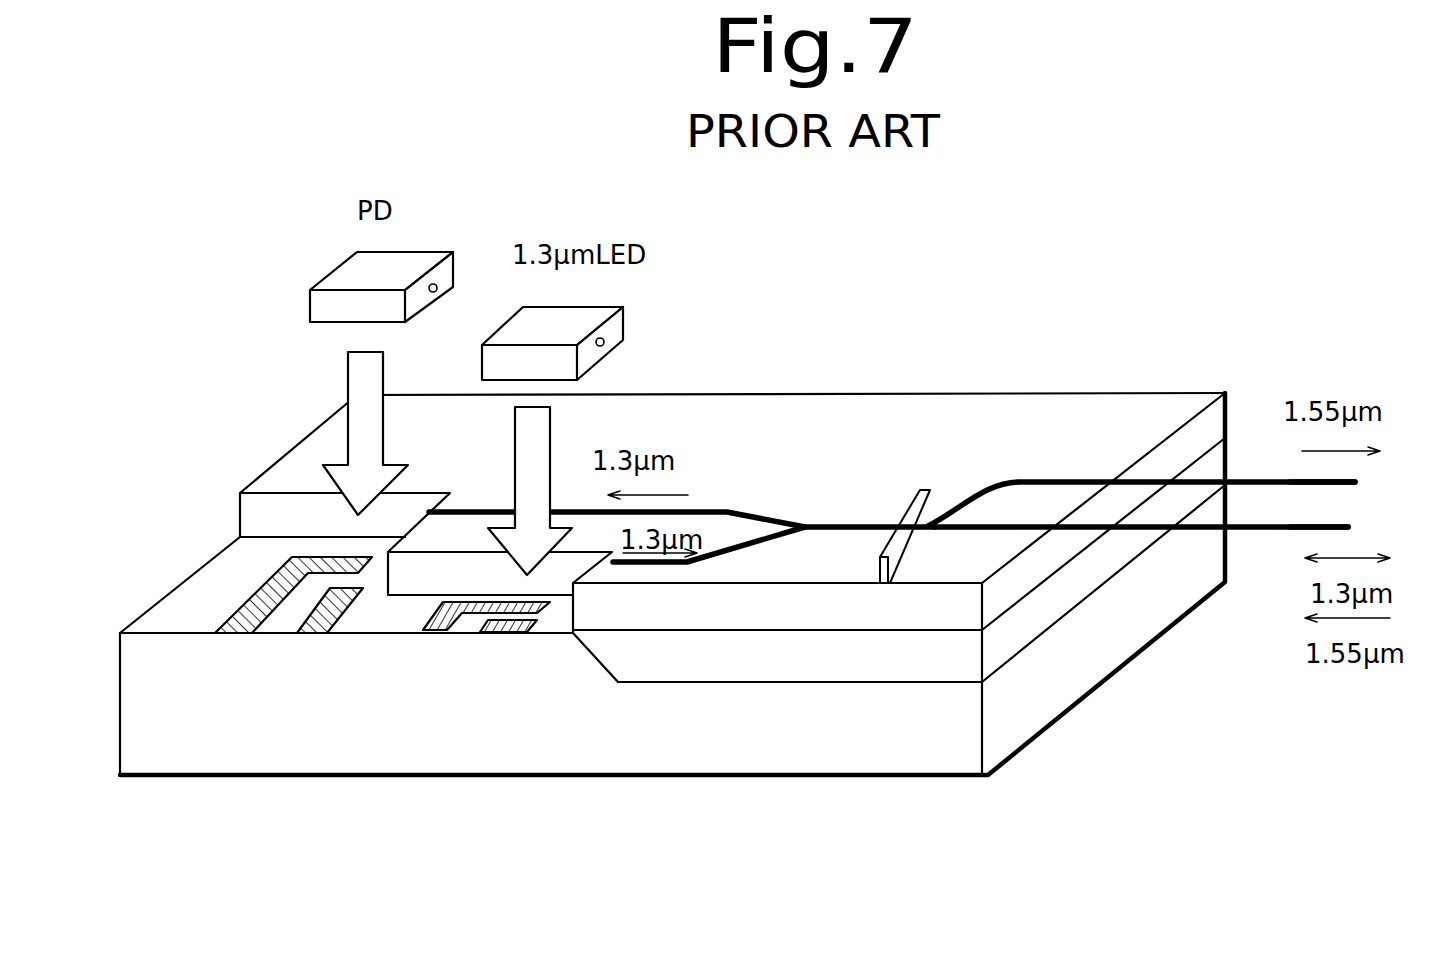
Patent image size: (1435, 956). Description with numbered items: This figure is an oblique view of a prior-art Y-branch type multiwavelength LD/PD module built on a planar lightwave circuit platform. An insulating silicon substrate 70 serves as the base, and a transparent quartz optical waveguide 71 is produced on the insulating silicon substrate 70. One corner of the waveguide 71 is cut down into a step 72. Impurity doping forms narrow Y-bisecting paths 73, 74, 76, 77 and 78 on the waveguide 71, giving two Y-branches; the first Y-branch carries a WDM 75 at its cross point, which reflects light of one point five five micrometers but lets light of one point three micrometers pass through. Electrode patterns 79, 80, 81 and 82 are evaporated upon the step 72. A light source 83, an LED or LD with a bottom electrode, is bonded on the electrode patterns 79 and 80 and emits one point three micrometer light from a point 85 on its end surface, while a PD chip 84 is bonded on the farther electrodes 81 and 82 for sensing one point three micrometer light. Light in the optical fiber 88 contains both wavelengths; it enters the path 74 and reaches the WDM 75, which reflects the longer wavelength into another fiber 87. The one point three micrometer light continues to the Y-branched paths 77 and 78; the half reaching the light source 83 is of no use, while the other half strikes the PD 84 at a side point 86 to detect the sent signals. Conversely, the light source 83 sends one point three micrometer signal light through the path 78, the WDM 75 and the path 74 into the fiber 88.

The insulating silicon substrate 70 is at (545, 725).
The optical waveguide 71 is at (808, 428).
The step 72 is at (210, 590).
The path 73 is at (1078, 482).
The path 74 is at (990, 532).
The WDM 75 is at (925, 488).
The path 76 is at (875, 522).
The path 77 is at (760, 511).
The path 78 is at (802, 532).
The electrode pattern 79 is at (447, 620).
The electrode pattern 80 is at (505, 622).
The electrode pattern 81 is at (316, 615).
The electrode pattern 82 is at (250, 620).
The light source 83 is at (552, 343).
The PD chip 84 is at (381, 287).
The point 85 is at (604, 340).
The side point 86 is at (436, 292).
The fiber 87 is at (1320, 485).
The optical fiber 88 is at (1294, 531).